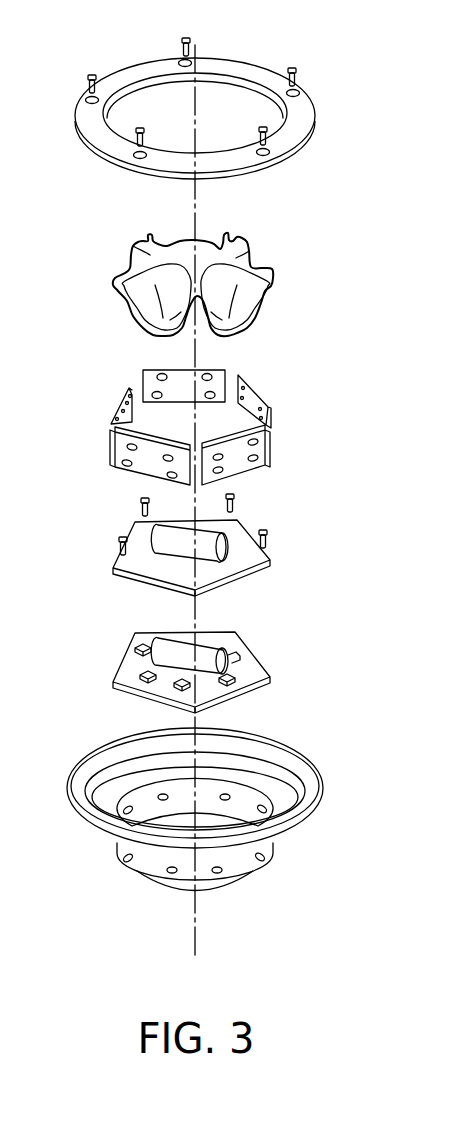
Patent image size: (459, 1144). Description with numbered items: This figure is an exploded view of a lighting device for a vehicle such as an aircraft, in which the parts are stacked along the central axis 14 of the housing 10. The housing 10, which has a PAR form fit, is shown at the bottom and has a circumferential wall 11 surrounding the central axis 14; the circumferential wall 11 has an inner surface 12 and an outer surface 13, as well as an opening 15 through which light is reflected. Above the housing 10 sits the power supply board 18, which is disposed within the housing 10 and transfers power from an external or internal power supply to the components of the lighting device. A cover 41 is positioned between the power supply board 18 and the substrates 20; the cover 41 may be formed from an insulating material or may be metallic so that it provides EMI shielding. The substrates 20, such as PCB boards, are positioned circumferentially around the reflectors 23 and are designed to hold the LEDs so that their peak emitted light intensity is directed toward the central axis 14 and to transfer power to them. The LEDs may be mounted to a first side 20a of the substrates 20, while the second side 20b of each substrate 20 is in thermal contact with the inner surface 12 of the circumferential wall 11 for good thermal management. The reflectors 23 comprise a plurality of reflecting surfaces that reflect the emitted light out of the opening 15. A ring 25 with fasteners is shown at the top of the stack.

The housing 10 is at (210, 810).
The circumferential wall 11 is at (143, 867).
The inner surface 12 is at (97, 772).
The outer surface 13 is at (78, 818).
The central axis 14 is at (195, 211).
The opening 15 is at (237, 790).
The power supply board 18 is at (260, 672).
The substrate 20 is at (189, 417).
The first side 20a is at (148, 380).
The second side 20b is at (120, 455).
The reflectors 23 is at (273, 277).
The ring 25 is at (303, 116).
The cover 41 is at (245, 535).